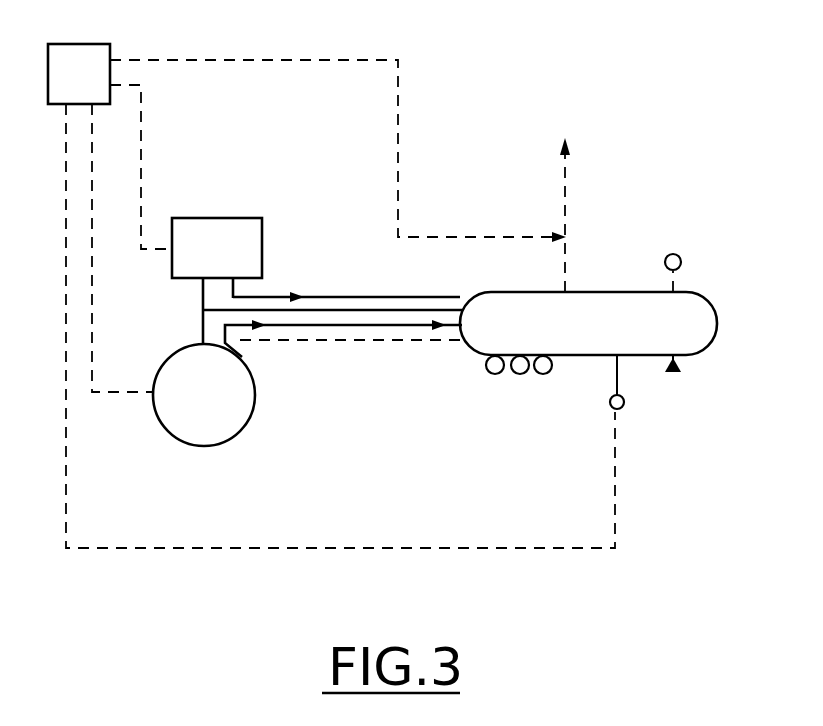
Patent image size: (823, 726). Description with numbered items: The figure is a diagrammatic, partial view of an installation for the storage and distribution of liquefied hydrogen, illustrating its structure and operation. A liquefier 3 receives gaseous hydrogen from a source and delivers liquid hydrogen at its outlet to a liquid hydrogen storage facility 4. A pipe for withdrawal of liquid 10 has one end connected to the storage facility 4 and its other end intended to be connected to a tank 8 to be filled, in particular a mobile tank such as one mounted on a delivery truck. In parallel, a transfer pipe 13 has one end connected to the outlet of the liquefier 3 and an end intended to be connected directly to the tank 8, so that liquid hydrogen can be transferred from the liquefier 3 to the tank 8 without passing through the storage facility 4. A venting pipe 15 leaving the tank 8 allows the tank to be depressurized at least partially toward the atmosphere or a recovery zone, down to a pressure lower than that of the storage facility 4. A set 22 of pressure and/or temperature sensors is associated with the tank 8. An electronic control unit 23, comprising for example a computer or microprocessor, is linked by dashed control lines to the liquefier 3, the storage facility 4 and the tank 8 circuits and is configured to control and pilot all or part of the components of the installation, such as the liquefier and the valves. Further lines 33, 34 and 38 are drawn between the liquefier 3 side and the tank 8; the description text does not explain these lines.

The liquefier 3 is at (200, 240).
The liquid hydrogen storage facility 4 is at (185, 418).
The tank 8 is at (703, 343).
The pipe for withdrawal of liquid 10 is at (197, 328).
The transfer pipe 13 is at (197, 297).
The venting pipe 15 is at (573, 247).
The set of pressure and/or temperature sensors 22 is at (682, 255).
The electronic control unit 23 is at (63, 88).
The supply line 33 is at (304, 295).
The return line 34 is at (365, 330).
The control line 38 is at (428, 344).